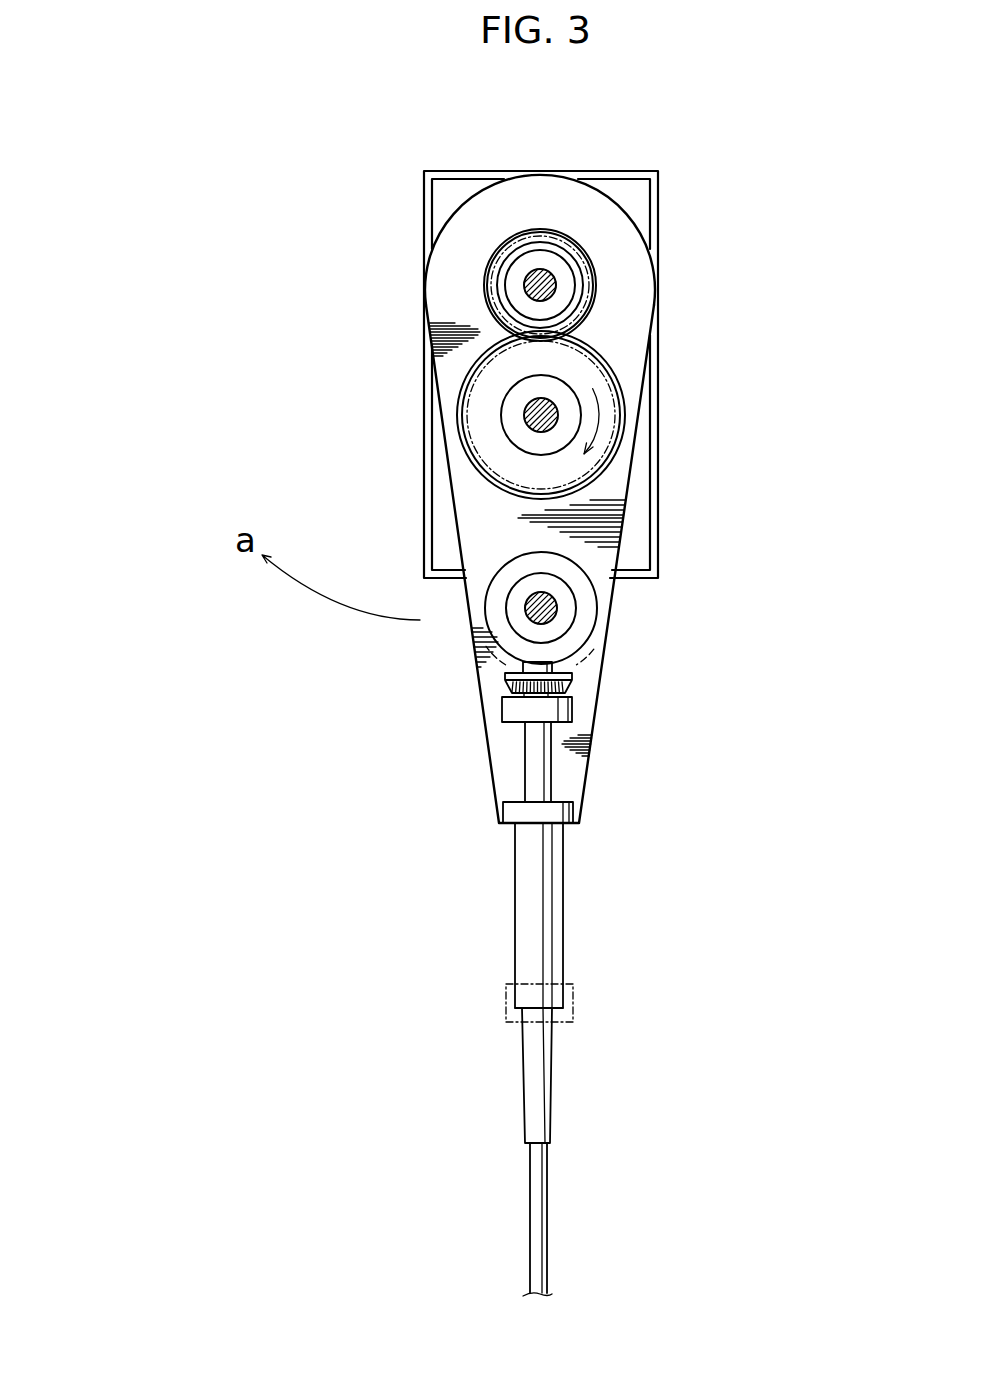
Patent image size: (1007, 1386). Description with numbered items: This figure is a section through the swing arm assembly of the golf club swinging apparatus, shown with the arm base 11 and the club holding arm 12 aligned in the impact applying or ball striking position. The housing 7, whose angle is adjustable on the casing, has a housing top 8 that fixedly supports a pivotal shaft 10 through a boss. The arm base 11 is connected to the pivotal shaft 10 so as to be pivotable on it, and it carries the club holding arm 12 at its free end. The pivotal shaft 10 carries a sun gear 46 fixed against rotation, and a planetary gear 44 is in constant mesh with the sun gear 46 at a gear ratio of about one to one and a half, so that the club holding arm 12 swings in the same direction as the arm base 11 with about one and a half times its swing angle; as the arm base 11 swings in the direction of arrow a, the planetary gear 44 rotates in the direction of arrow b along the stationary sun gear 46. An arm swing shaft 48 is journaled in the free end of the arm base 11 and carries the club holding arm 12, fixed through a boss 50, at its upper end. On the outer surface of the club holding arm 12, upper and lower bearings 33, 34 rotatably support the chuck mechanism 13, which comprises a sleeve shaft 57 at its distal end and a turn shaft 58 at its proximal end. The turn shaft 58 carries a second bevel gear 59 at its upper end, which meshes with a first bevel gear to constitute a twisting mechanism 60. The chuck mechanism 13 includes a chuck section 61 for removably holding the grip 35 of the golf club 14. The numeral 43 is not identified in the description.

The housing 7 is at (658, 518).
The housing top 8 is at (637, 463).
The pivotal shaft 10 is at (556, 283).
The arm base 11 is at (443, 276).
The club holding arm 12 is at (588, 737).
The chuck mechanism 13 is at (591, 998).
The golf club 14 is at (561, 1191).
The bearing 33 is at (575, 708).
The bearing 34 is at (573, 810).
The grip 35 is at (551, 1118).
The shaft 43 is at (525, 417).
The planetary gear 44 is at (541, 415).
The sun gear 46 is at (568, 230).
The arm swing shaft 48 is at (560, 612).
The boss 50 is at (597, 608).
The sleeve shaft 57 is at (523, 910).
The turn shaft 58 is at (533, 760).
The second bevel gear 59 is at (512, 691).
The twisting mechanism 60 is at (513, 749).
The chuck section 61 is at (512, 1023).